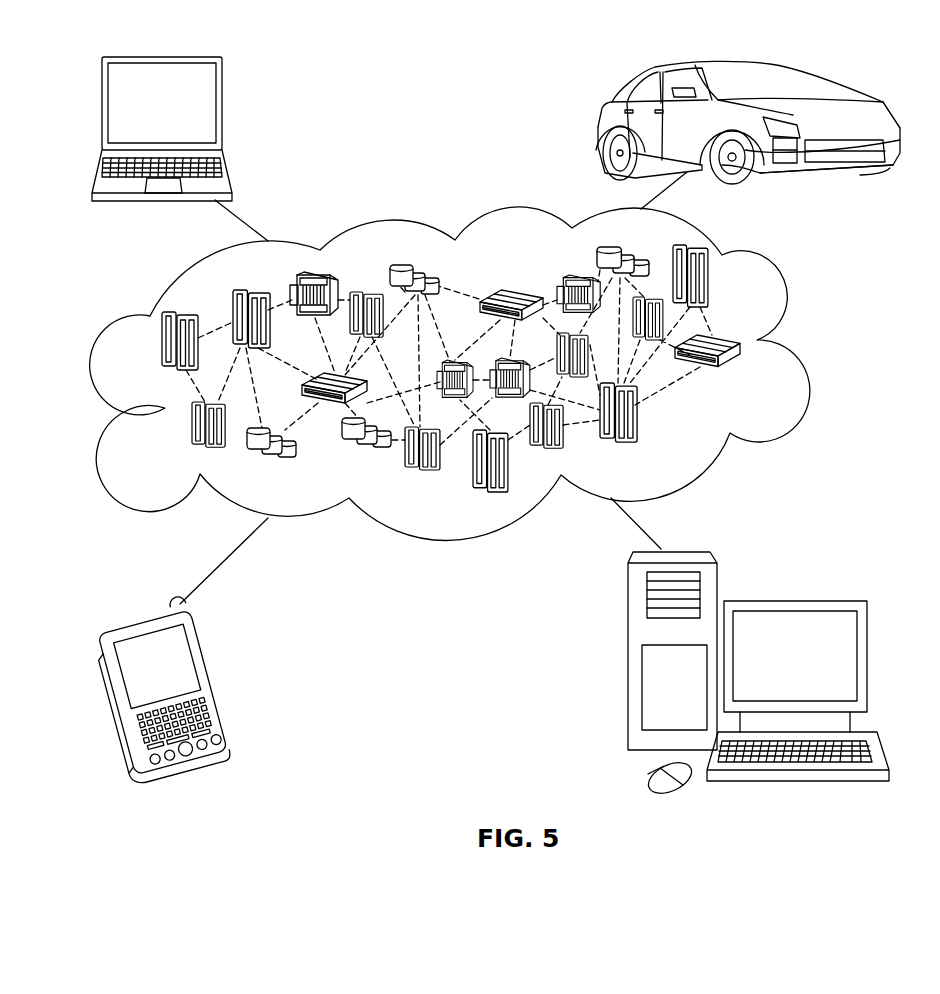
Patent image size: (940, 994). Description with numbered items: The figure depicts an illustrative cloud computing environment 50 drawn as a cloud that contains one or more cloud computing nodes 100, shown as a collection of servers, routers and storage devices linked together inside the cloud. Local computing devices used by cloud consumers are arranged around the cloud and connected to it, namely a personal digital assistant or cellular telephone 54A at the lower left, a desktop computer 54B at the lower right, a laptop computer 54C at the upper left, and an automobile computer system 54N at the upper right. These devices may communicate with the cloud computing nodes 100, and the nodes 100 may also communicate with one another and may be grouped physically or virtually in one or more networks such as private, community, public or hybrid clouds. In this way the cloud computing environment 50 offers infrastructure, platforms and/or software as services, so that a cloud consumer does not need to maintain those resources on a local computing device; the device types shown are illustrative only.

The cloud computing environment 50 is at (783, 345).
The cloud computing nodes 100 is at (744, 373).
The personal digital assistant (PDA) or cellular telephone 54A is at (213, 683).
The desktop computer 54B is at (793, 600).
The laptop computer 54C is at (222, 113).
The automobile computer system 54N is at (603, 122).